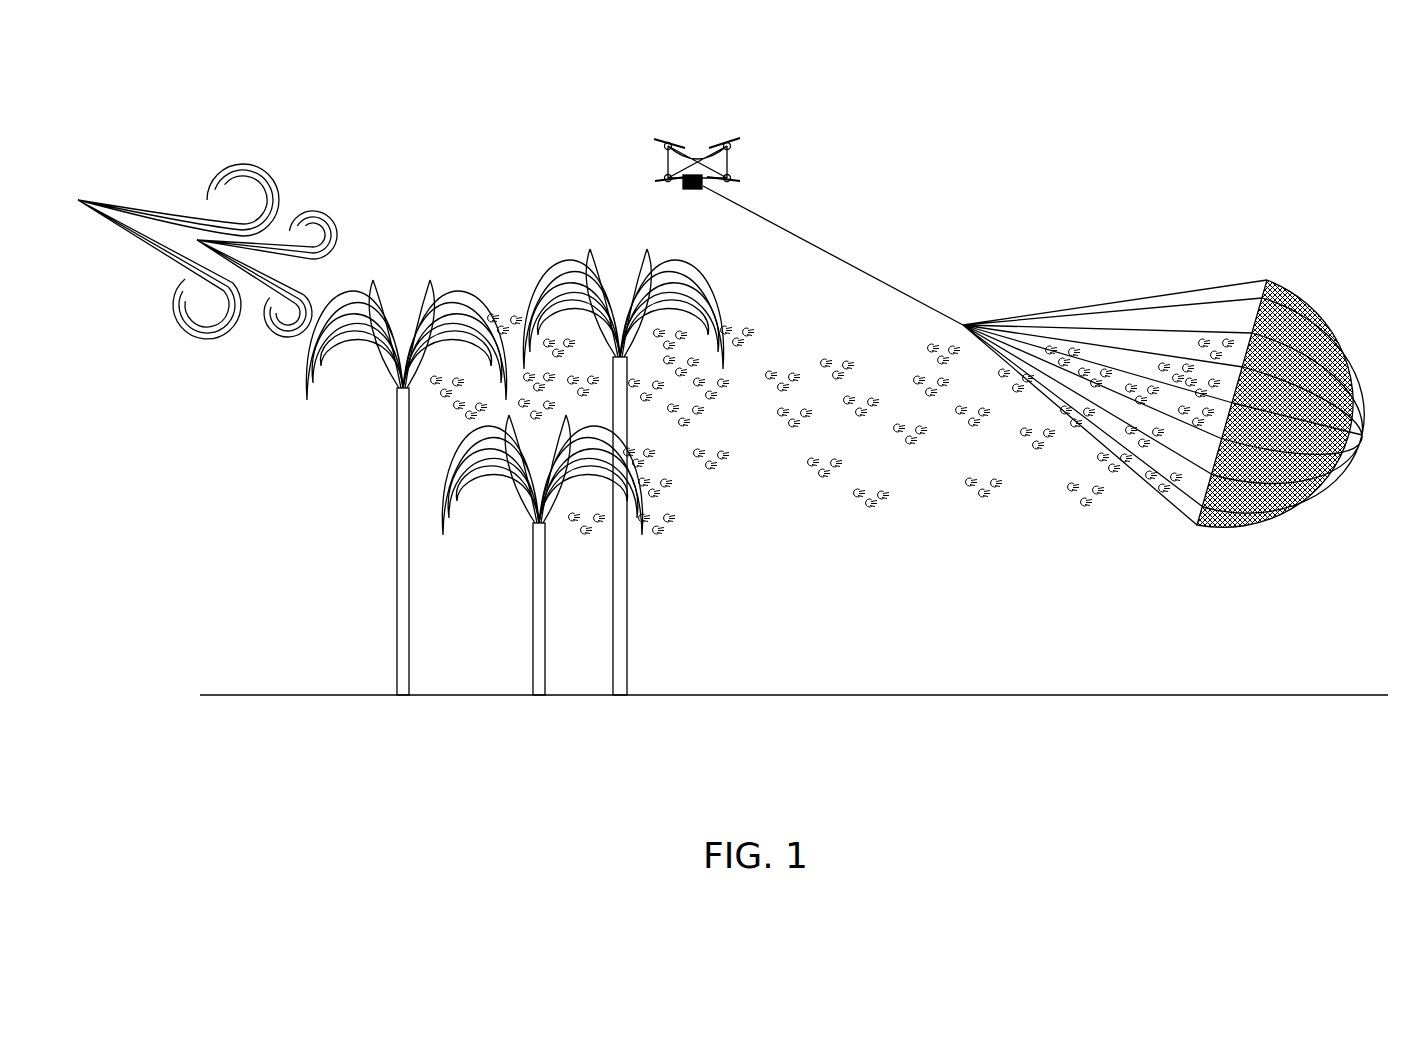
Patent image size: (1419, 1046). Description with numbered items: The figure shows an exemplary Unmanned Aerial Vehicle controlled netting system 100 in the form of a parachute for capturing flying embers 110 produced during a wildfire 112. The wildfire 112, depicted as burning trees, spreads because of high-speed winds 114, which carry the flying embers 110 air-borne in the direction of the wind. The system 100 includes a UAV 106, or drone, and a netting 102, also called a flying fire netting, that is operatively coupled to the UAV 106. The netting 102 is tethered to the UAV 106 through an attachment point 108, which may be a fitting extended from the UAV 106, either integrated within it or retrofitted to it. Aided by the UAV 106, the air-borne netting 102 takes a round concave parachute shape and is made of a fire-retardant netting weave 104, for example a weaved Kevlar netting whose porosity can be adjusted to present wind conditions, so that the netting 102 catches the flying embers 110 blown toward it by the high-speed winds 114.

The Unmanned Aerial Vehicle (UAV) controlled netting system 100 is at (1134, 72).
The netting 102 is at (962, 320).
The fire-retardant netting weave 104 is at (1296, 283).
The UAV 106 is at (697, 150).
The attachment point 108 is at (701, 190).
The flying embers 110 is at (828, 340).
The wildfire 112 is at (430, 282).
The high-speed winds 114 is at (170, 192).